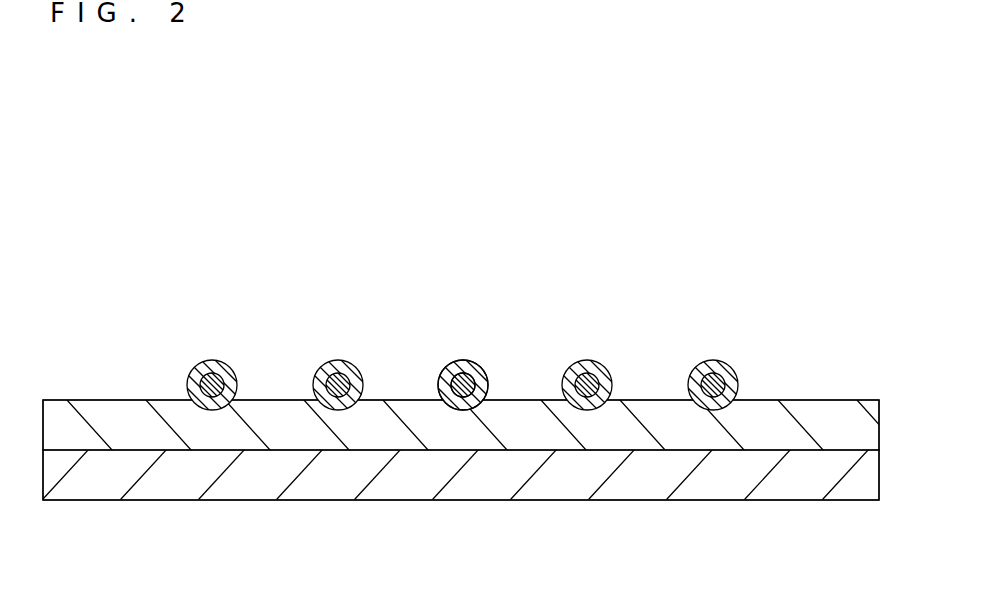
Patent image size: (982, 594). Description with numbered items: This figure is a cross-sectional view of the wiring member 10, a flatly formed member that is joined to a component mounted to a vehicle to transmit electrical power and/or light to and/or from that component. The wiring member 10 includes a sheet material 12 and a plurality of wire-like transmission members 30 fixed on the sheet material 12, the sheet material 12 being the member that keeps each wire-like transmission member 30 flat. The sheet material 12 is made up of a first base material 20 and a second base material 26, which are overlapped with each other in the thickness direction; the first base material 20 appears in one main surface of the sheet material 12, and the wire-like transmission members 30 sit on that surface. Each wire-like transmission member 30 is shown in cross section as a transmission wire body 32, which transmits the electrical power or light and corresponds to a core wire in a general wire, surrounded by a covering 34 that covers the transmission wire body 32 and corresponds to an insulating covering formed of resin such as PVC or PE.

The wiring member 10 is at (120, 185).
The sheet material 12 is at (82, 398).
The first base material 20 is at (820, 412).
The second base material 26 is at (820, 487).
The wire-like transmission member 30 is at (310, 372).
The transmission wire body 32 is at (470, 363).
The covering 34 is at (457, 362).